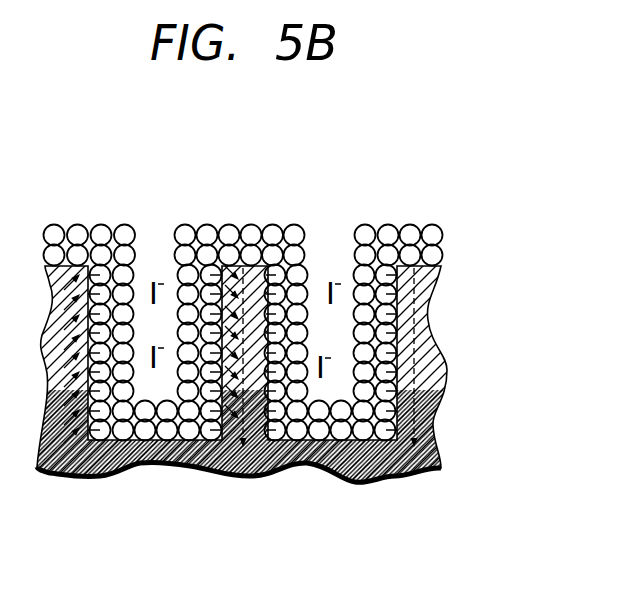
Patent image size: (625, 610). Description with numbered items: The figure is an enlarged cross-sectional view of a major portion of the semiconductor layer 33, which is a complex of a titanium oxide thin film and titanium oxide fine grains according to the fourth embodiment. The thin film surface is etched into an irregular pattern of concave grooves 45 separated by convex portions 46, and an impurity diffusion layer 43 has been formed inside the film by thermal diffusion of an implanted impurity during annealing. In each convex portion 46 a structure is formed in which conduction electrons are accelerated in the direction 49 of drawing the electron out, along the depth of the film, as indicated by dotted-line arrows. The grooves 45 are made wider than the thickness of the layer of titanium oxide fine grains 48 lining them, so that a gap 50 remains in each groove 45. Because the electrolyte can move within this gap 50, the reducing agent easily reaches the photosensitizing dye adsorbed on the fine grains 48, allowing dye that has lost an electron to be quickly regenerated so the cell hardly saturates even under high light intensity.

The semiconductor layer 33 is at (458, 268).
The impurity diffusion layer 43 is at (432, 392).
The groove 45 is at (335, 477).
The convex portion 46 is at (269, 266).
The titanium oxide fine grain 48 is at (432, 235).
The direction of drawing the electron out 49 is at (262, 473).
The gap 50 is at (151, 252).